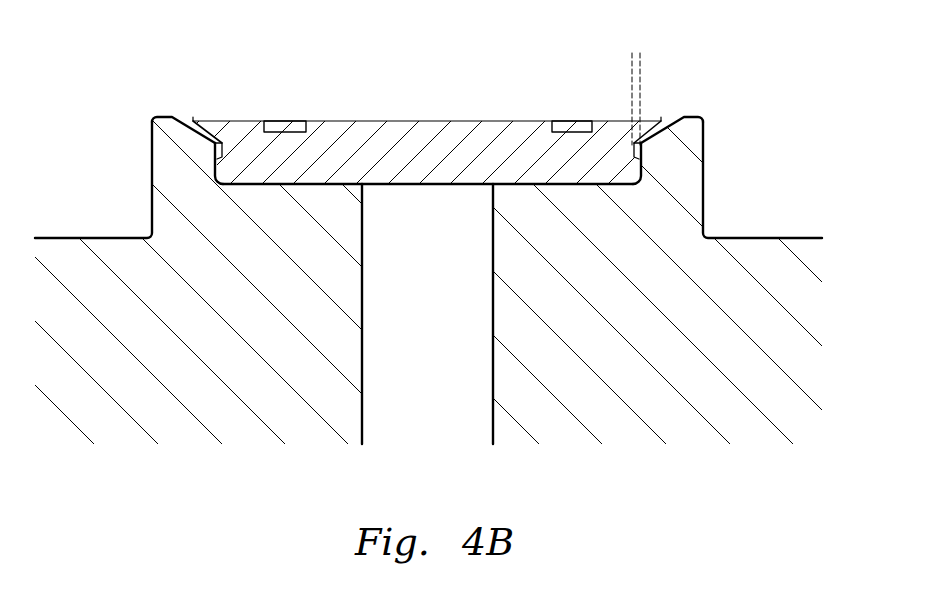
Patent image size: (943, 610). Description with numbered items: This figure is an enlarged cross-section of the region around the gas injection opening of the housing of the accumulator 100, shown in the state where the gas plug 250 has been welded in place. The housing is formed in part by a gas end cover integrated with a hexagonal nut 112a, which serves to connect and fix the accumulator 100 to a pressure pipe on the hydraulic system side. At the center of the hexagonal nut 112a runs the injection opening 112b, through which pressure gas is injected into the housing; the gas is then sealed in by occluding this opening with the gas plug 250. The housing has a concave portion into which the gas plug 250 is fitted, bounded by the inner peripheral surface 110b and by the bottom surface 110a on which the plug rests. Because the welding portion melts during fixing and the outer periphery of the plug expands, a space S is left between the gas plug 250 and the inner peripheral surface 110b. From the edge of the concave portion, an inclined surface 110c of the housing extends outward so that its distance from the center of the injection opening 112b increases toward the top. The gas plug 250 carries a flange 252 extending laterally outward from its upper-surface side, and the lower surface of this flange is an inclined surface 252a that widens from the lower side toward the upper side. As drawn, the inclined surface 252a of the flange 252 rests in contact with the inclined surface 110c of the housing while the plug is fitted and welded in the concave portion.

The accumulator 100 is at (735, 97).
The hexagonal nut 112a is at (168, 149).
The inclined surface 110c is at (191, 113).
The inner peripheral surface 110b is at (217, 170).
The recess bottom surface 110a is at (315, 183).
The injection opening 112b is at (362, 410).
The flange 252 is at (204, 125).
The inclined surface 252a is at (214, 142).
The gas plug 250 is at (453, 134).
The space S is at (604, 66).